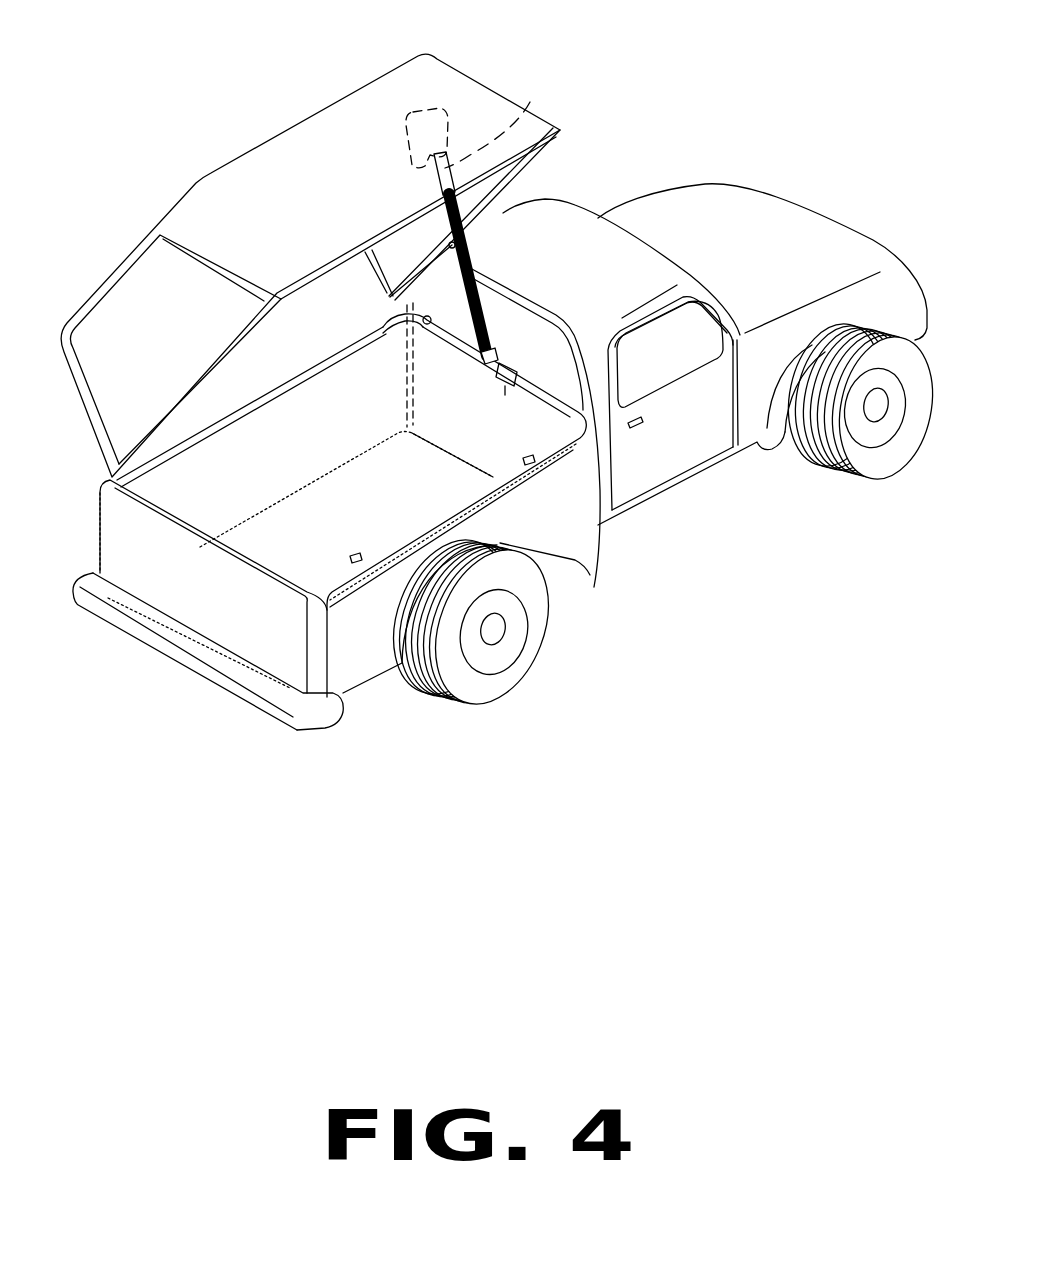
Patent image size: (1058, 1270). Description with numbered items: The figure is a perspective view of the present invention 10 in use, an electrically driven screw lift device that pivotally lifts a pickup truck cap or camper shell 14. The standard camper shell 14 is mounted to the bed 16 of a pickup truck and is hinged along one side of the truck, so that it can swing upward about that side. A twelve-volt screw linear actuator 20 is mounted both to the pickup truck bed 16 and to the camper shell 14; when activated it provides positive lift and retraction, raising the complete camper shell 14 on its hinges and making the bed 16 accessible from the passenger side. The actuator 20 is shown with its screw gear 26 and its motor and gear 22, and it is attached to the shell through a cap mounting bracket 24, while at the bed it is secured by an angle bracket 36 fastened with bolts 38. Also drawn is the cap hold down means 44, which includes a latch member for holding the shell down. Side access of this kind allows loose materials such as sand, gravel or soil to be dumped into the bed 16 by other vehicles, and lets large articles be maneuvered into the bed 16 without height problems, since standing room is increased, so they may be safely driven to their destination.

The present invention 10 is at (599, 258).
The camper shell 14 is at (188, 262).
The bed 16 is at (300, 528).
The screw linear actuator 20 is at (530, 102).
The motor and gear 22 is at (430, 108).
The cap mounting bracket 24 is at (446, 186).
The screw gear 26 is at (478, 294).
The angle bracket 36 is at (385, 332).
The bolts 38 is at (385, 332).
The cap hold down means 44 is at (360, 563).